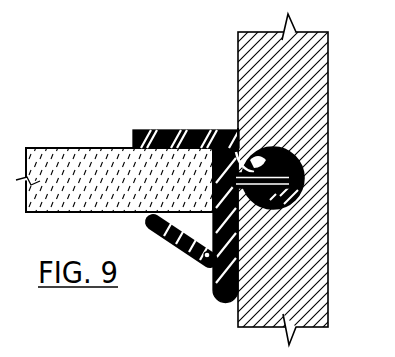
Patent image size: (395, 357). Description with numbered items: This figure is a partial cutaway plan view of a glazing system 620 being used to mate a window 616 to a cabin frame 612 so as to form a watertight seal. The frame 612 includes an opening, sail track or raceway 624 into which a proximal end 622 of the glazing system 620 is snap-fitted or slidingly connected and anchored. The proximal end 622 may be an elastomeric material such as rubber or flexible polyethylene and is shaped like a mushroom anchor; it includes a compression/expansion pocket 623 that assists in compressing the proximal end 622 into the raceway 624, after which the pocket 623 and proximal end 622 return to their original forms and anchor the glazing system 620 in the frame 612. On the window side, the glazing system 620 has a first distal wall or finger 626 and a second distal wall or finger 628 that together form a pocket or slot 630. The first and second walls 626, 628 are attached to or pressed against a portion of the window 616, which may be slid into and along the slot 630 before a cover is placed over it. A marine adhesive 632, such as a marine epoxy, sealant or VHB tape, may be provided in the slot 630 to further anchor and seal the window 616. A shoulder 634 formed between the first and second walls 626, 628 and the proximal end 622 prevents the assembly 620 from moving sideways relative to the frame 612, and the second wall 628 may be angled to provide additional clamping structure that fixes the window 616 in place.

The cabin frame 612 is at (318, 83).
The window 616 is at (83, 157).
The glazing system 620 is at (208, 124).
The proximal end 622 is at (303, 152).
The compression/expansion pocket 623 is at (296, 197).
The raceway 624 is at (261, 198).
The first wall 626 is at (172, 130).
The second wall 628 is at (167, 238).
The slot 630 is at (205, 232).
The marine adhesive 632 is at (132, 147).
The shoulder 634 is at (238, 130).